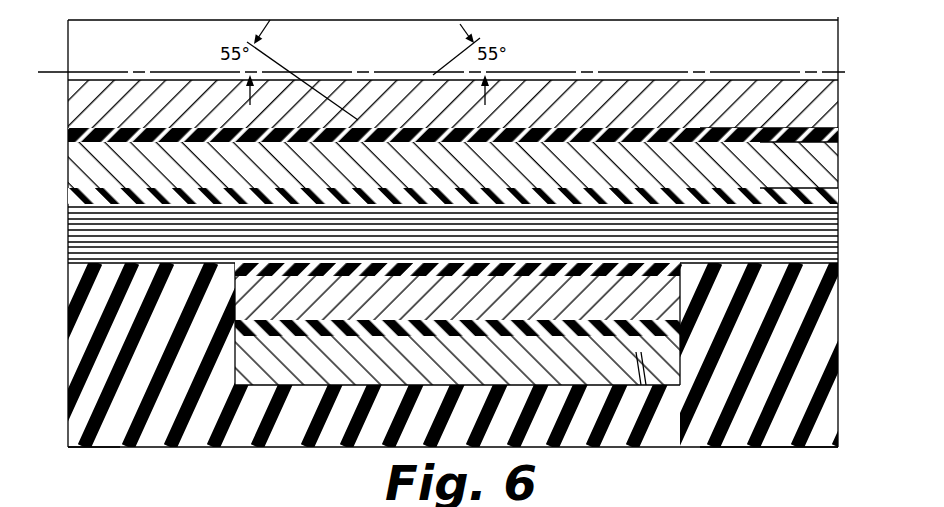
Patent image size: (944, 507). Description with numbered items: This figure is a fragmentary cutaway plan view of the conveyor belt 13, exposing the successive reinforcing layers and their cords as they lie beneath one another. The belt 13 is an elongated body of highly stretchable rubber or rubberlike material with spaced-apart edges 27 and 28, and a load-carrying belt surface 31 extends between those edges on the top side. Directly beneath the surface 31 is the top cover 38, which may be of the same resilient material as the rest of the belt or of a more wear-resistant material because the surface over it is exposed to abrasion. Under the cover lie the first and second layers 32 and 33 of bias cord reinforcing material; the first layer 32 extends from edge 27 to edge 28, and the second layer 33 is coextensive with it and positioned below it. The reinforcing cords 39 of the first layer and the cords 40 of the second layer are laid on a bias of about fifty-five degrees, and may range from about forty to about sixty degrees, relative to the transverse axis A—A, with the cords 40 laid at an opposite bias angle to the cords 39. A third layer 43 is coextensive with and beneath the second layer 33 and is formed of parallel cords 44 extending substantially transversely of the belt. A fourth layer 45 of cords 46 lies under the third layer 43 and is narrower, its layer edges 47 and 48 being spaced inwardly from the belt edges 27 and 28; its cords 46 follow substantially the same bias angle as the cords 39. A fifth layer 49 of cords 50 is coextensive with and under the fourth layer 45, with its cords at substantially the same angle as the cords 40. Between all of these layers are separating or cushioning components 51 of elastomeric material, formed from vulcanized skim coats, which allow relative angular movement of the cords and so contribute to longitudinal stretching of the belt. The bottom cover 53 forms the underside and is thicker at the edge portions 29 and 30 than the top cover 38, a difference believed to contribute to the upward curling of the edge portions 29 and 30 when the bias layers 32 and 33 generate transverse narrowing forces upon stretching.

The conveyor belt 13 is at (838, 135).
The edge 27 is at (68, 440).
The edge 28 is at (838, 400).
The edge portion 29 is at (80, 326).
The edge portion 30 is at (824, 352).
The load-carrying belt surface 31 is at (822, 42).
The first layer 32 is at (838, 122).
The second layer 33 is at (826, 152).
The top cover 38 is at (824, 96).
The reinforcing cords 39 is at (95, 110).
The reinforcing cords 40 is at (95, 170).
The third layer 43 is at (70, 212).
The parallel cords 44 is at (100, 250).
The fourth layer 45 is at (688, 272).
The reinforcing cords 46 is at (672, 298).
The layer edge 47 is at (235, 362).
The layer edge 48 is at (663, 358).
The fifth layer 49 is at (680, 352).
The reinforcing cords 50 is at (646, 385).
The cushioning components 51 is at (68, 136).
The bottom cover 53 is at (775, 432).
The transverse axis A is at (448, 71).